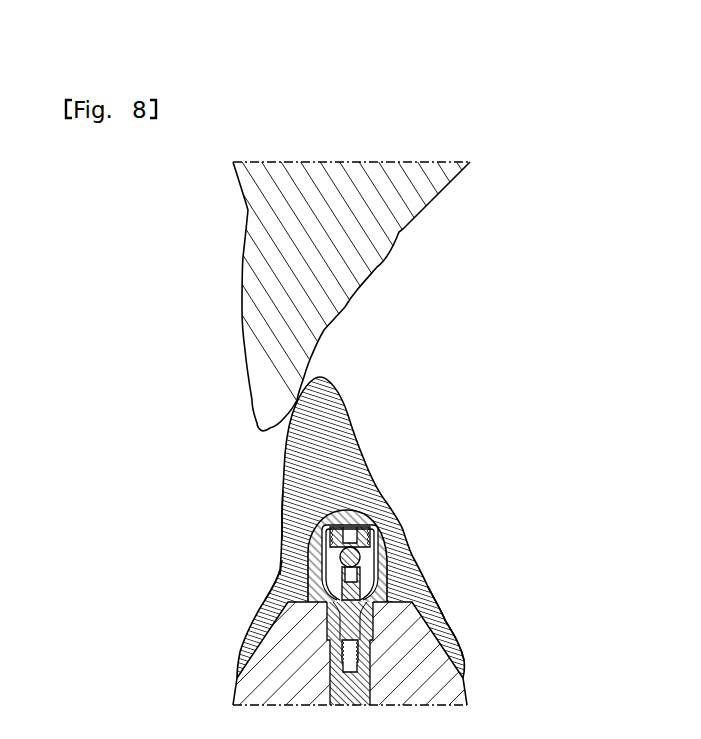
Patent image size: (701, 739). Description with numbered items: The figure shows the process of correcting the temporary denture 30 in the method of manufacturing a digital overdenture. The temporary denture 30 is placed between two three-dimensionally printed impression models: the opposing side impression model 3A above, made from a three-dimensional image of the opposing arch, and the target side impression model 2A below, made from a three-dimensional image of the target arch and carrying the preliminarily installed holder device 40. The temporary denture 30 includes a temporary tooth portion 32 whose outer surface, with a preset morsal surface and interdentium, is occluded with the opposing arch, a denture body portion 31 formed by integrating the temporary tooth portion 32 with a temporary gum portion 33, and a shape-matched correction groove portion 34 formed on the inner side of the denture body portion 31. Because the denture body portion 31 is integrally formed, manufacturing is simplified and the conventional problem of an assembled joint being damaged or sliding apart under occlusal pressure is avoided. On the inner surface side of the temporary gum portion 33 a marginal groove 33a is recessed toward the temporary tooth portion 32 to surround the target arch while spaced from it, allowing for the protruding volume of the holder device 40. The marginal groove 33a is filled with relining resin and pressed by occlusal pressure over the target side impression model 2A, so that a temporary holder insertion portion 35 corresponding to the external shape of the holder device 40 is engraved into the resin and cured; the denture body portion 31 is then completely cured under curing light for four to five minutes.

The opposing side impression model 3A is at (234, 313).
The temporary denture 30 is at (178, 517).
The denture body portion 31 is at (276, 513).
The temporary tooth portion 32 is at (336, 417).
The temporary gum portion 33 is at (458, 642).
The marginal groove 33a is at (351, 510).
The shape-matched correction groove portion 34 is at (287, 567).
The temporary holder insertion portion 35 is at (373, 573).
The holder device 40 is at (388, 525).
The target side impression model 2A is at (238, 662).